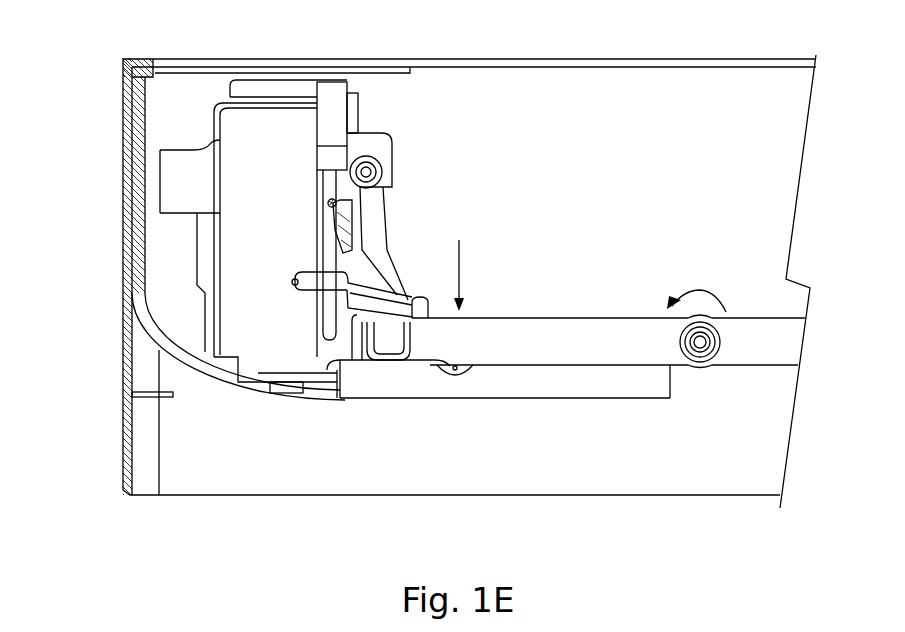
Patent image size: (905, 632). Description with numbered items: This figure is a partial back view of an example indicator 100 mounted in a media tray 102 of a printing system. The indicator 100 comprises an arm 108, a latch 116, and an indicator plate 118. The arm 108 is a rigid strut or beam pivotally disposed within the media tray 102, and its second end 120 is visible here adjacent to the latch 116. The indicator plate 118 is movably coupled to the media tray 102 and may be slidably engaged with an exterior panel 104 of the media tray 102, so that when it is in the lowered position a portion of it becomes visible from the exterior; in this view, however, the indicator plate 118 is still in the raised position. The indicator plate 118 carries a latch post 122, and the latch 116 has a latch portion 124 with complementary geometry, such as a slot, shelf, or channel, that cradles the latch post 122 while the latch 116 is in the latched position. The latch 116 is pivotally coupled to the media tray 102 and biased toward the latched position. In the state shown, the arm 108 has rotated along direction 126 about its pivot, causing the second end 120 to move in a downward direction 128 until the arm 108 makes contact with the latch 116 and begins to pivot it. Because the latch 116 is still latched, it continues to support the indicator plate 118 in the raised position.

The indicator 100 is at (70, 60).
The media tray 102 is at (820, 186).
The exterior panel 104 is at (781, 116).
The arm 108 is at (503, 358).
The latch 116 is at (398, 337).
The indicator plate 118 is at (267, 87).
The second end 120 is at (333, 282).
The latch post 122 is at (328, 203).
The latch portion 124 is at (330, 222).
The direction 126 is at (705, 288).
The downward direction 128 is at (460, 275).